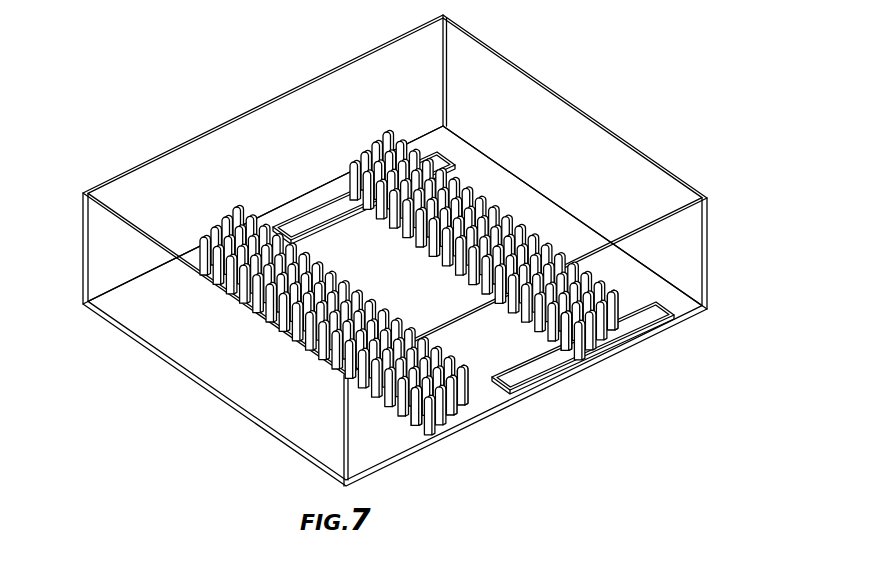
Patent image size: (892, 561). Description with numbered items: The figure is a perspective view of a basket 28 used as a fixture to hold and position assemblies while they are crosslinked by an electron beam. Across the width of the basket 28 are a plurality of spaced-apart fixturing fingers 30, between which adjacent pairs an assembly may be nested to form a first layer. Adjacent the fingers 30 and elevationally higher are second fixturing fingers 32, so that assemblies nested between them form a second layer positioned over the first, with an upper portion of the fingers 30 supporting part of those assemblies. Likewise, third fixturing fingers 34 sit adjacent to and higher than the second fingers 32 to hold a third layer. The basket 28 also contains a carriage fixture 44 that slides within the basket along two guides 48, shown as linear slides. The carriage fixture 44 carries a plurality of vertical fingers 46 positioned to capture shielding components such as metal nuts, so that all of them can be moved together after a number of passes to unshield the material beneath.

The basket 28 is at (546, 57).
The fixturing fingers 30 is at (413, 410).
The second fixturing fingers 32 is at (458, 413).
The third fixturing fingers 34 is at (463, 388).
The carriage fixture 44 is at (442, 308).
The vertical fingers 46 is at (620, 298).
The guides 48 is at (273, 135).